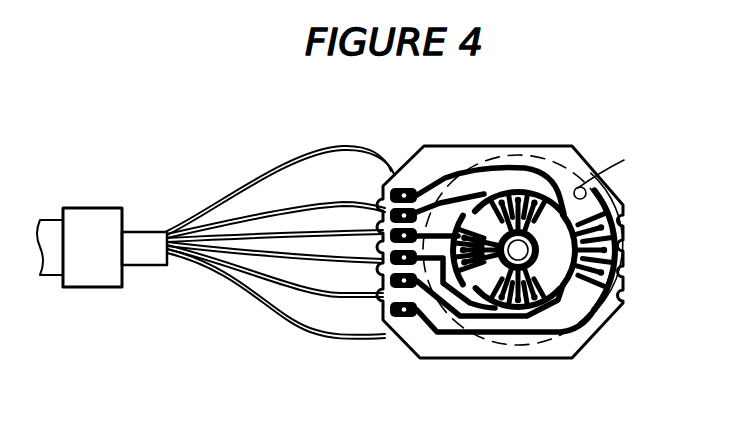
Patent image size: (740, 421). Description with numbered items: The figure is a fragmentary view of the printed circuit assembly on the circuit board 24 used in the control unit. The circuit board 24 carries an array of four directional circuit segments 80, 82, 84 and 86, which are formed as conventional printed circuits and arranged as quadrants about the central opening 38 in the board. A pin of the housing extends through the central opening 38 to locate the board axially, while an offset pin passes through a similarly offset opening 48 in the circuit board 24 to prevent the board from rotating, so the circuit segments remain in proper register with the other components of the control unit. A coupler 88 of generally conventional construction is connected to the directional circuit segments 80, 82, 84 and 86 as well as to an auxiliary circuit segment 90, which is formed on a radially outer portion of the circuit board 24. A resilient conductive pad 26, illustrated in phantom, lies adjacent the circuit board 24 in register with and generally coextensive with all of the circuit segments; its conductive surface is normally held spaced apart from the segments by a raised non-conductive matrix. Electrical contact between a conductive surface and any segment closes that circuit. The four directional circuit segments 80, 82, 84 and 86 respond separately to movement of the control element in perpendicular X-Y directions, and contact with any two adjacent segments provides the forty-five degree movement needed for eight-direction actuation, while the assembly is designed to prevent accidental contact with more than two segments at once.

The circuit board 24 is at (498, 147).
The resilient pad 26 is at (597, 165).
The central opening 38 is at (520, 247).
The offset opening 48 is at (607, 177).
The directional circuit segment 80 is at (467, 187).
The directional circuit segment 82 is at (413, 180).
The directional circuit segment 84 is at (526, 325).
The directional circuit segment 86 is at (568, 298).
The coupler 88 is at (132, 230).
The auxiliary circuit segment 90 is at (622, 199).